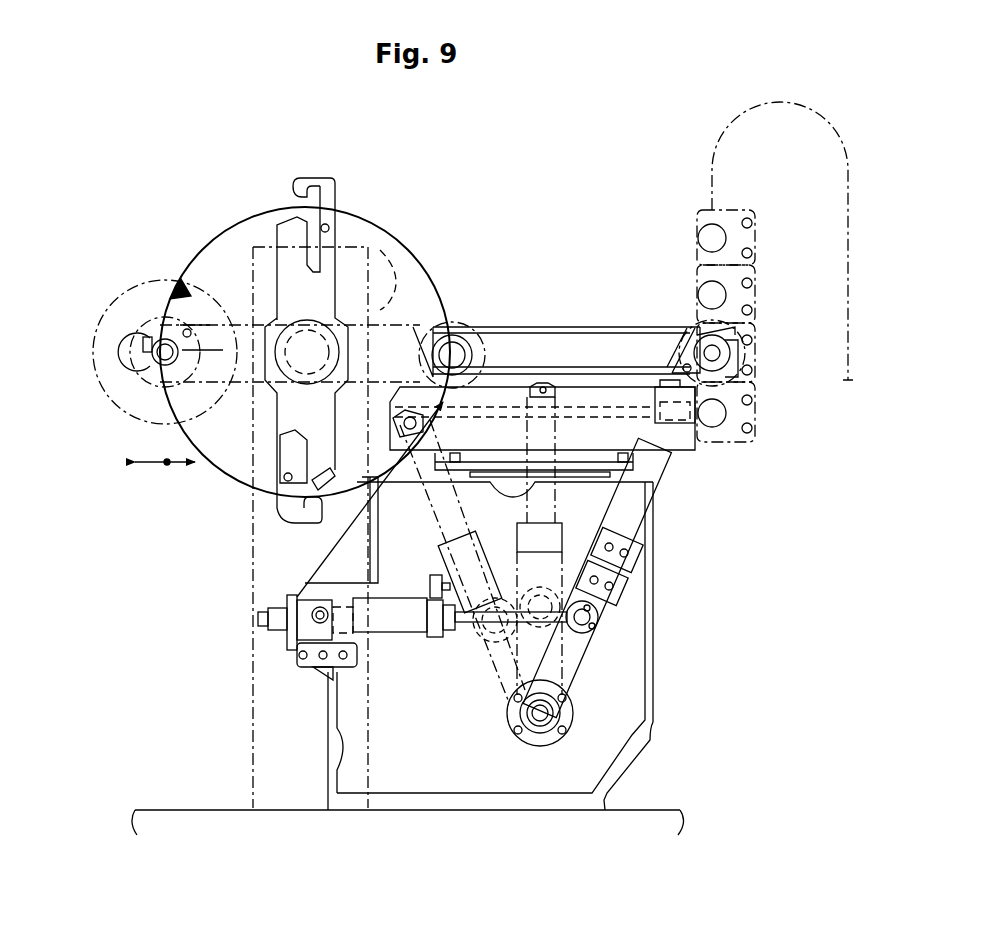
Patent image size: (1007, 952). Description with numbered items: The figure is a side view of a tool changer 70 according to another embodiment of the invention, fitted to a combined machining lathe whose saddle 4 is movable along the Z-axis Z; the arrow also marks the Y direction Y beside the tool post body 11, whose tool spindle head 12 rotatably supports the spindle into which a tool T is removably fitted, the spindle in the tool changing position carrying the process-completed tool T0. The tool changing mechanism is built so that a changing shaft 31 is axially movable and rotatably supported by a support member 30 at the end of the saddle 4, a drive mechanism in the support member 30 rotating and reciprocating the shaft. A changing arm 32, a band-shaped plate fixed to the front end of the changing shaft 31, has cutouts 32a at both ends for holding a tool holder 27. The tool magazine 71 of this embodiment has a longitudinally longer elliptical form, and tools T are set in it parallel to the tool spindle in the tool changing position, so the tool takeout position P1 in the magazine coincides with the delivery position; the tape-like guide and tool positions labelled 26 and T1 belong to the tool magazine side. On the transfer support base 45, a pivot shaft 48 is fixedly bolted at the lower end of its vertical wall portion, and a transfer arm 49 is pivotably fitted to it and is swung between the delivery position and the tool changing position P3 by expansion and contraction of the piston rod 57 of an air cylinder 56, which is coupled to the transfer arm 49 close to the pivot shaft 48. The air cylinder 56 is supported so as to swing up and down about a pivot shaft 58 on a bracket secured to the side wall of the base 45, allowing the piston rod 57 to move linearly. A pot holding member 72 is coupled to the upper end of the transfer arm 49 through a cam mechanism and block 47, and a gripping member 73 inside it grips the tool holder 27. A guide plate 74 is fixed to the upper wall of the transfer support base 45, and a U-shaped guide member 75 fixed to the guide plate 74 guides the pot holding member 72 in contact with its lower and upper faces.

The saddle 4 is at (183, 803).
The tool post body 11 is at (158, 270).
The tool spindle head 12 is at (113, 307).
The tape guide blocks 26 is at (755, 290).
The tool holder 27 is at (735, 327).
The support member 30 is at (418, 250).
The changing shaft 31 is at (372, 315).
The changing arm 32 is at (343, 235).
The cutouts 32a is at (298, 190).
The transfer support base 45 is at (657, 695).
The cylinder 47 is at (646, 400).
The pivot shaft 48 is at (557, 717).
The transfer arm 49 is at (632, 593).
The air cylinder 56 is at (387, 636).
The piston rod 57 is at (452, 625).
The pivot shaft 58 is at (320, 613).
The tool changer 70 is at (542, 236).
The tool magazine 71 is at (859, 272).
The pot holding member 72 is at (672, 358).
The gripping member 73 is at (723, 383).
The guide plate 74 is at (683, 450).
The U-shaped guide member 75 is at (562, 327).
The tool T is at (697, 300).
The process-completed tool T0 is at (150, 365).
The tape position T1 is at (477, 313).
The tool takeout position P1 is at (712, 353).
The tool changing position P3 is at (452, 345).
The Y direction Y is at (150, 465).
The Z-axis Z is at (168, 465).